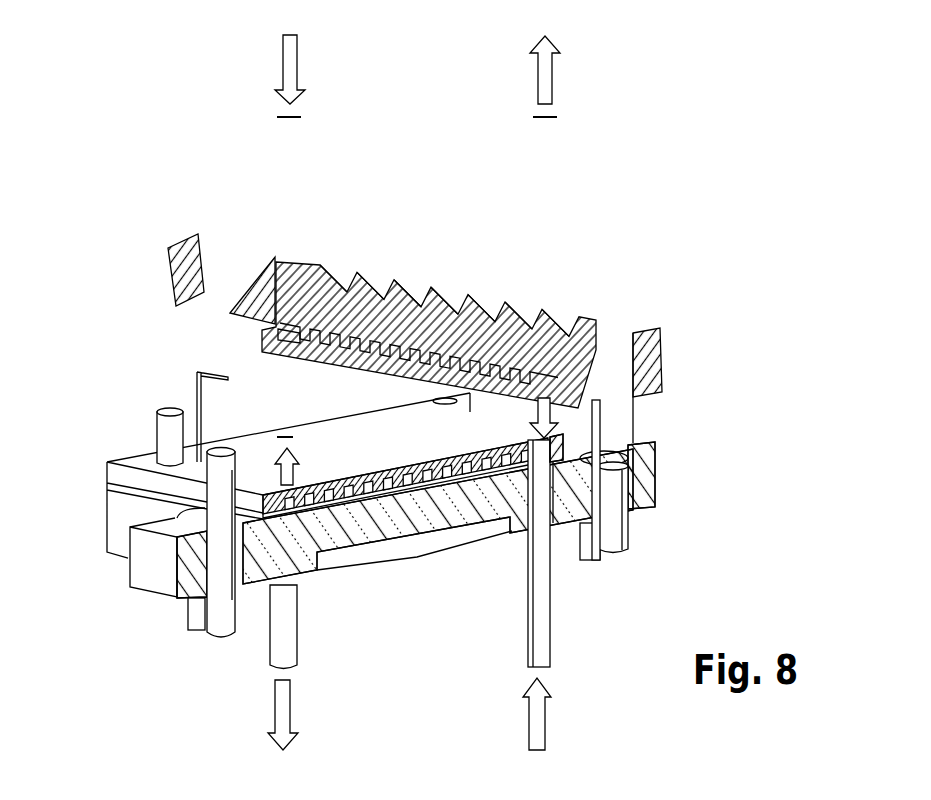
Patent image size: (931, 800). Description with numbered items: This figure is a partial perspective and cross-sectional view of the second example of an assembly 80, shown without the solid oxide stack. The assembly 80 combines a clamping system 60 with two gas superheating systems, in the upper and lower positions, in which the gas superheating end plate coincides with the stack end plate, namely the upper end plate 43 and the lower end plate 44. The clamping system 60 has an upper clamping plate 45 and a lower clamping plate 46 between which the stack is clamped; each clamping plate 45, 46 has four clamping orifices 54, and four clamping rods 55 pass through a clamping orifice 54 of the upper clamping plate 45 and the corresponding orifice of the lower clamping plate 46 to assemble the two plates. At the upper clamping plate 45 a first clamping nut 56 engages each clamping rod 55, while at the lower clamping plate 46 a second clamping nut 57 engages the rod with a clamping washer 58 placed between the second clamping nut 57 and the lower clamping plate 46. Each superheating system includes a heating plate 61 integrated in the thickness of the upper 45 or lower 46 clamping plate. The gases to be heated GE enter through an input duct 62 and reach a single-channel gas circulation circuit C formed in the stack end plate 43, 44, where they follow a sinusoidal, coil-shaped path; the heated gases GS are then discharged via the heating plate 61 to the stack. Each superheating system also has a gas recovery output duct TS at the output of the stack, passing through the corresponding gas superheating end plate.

The assembly 80 is at (88, 196).
The upper end plate 43 is at (262, 333).
The lower end plate 44 is at (105, 466).
The upper clamping plate 45 is at (180, 250).
The lower clamping plate 46 is at (148, 567).
The clamping orifice 54 is at (178, 568).
The clamping rod 55 is at (217, 323).
The first clamping nut 56 is at (242, 613).
The second clamping nut 57 is at (202, 208).
The clamping washer 58 is at (263, 250).
The clamping system 60 is at (737, 260).
The heating plate 61 is at (425, 260).
The input duct 62 is at (293, 212).
The gases to be heated GE is at (288, 75).
The gas recovery output duct TS is at (548, 153).
The heated gases GS is at (290, 473).
The gas circulation circuit C is at (367, 372).